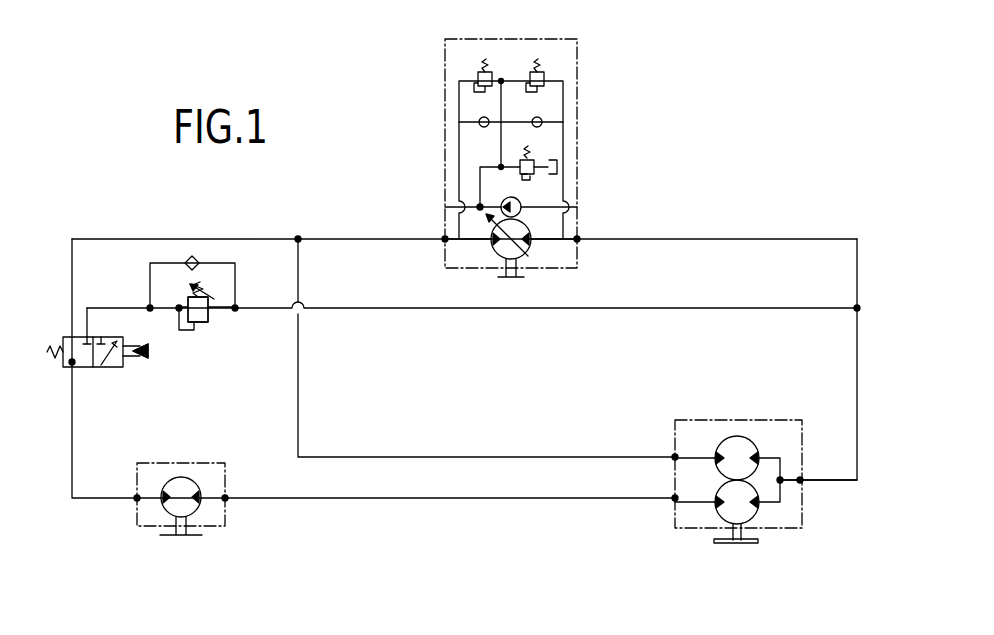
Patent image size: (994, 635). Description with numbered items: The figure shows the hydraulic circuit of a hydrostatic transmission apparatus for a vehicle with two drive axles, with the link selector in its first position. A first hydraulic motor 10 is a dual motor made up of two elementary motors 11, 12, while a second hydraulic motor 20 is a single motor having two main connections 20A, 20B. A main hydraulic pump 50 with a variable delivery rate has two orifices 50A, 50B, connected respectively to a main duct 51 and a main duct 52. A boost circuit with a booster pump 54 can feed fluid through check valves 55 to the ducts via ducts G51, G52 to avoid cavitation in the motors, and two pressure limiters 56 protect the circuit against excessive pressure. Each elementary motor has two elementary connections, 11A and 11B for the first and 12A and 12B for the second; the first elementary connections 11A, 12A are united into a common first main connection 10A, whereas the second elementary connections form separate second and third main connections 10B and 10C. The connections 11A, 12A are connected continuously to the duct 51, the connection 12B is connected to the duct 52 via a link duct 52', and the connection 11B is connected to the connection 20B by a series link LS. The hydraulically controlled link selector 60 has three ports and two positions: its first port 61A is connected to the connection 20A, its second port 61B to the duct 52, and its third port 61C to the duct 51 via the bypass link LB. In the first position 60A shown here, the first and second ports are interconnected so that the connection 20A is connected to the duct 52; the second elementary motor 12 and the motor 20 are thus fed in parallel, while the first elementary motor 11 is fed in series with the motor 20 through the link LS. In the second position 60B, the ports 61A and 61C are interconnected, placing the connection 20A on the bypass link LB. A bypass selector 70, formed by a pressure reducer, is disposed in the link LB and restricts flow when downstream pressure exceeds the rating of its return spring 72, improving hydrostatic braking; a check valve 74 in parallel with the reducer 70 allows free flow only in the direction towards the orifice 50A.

The first hydraulic motor 10 is at (770, 420).
The first main connection 10A is at (802, 481).
The second main connection 10B is at (673, 502).
The third main connection 10C is at (673, 455).
The first elementary motor 11 is at (735, 518).
The first elementary connection 11A is at (760, 506).
The second elementary connection 11B is at (715, 505).
The second elementary motor 12 is at (736, 446).
The first elementary connection 12A is at (760, 455).
The second elementary connection 12B is at (715, 455).
The second hydraulic motor 20 is at (195, 462).
The main connection 20A is at (135, 500).
The main connection 20B is at (227, 500).
The main hydraulic pump 50 is at (531, 232).
The orifice 50A is at (528, 252).
The orifice 50B is at (494, 252).
The main duct 51 is at (767, 239).
The main duct 52 is at (464, 212).
The link duct 52' is at (485, 346).
The booster pump 54 is at (520, 201).
The check valves 55 is at (541, 120).
The pressure limiters 56 is at (540, 72).
The link selector 60 is at (128, 371).
The first position 60A is at (71, 364).
The second position 60B is at (149, 351).
The first port 61A is at (86, 368).
The second port 61B is at (70, 334).
The third port 61C is at (89, 338).
The bypass selector 70 is at (212, 326).
The return spring 72 is at (202, 292).
The check valve 74 is at (182, 253).
The duct G51 is at (563, 140).
The duct G52 is at (445, 142).
The bypass link LB is at (720, 308).
The series link LS is at (409, 498).